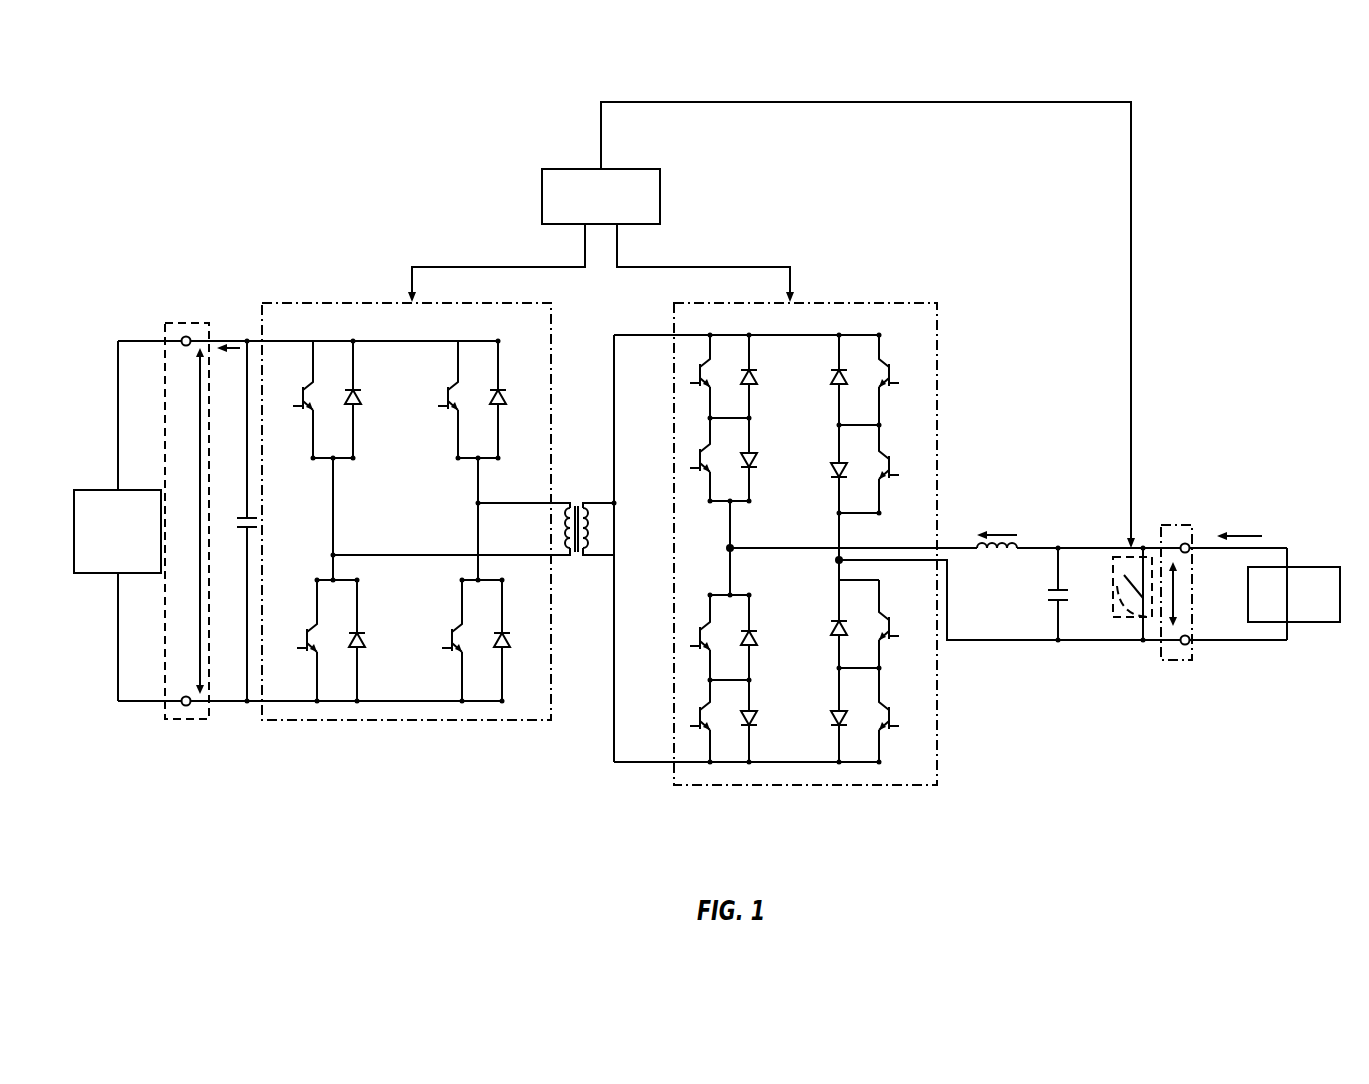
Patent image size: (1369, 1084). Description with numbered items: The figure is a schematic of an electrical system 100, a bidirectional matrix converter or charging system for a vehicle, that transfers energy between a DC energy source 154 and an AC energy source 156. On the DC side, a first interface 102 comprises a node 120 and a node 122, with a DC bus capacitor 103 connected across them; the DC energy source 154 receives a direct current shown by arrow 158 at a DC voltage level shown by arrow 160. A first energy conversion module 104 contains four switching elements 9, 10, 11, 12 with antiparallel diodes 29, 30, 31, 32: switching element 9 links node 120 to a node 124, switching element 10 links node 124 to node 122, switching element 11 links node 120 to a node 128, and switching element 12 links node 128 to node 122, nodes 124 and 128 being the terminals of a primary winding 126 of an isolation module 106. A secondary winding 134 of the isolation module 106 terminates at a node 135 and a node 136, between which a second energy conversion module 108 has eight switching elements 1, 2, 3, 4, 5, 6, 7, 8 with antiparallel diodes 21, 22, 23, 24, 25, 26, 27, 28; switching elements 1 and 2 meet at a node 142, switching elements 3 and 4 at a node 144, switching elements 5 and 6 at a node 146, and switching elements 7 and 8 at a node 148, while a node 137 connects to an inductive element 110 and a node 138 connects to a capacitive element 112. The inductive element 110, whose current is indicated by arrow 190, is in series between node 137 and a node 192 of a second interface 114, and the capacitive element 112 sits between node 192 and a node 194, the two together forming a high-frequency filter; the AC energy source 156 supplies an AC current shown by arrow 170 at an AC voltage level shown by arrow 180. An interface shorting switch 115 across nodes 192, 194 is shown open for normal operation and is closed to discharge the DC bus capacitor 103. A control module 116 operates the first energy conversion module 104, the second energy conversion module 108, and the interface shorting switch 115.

The electrical system 100 is at (184, 146).
The first interface 102 is at (183, 722).
The DC bus capacitor 103 is at (255, 522).
The first energy conversion module 104 is at (443, 722).
The isolation module 106 is at (577, 572).
The second energy conversion module 108 is at (868, 790).
The inductive element 110 is at (998, 560).
The capacitive element 112 is at (1076, 596).
The second interface 114 is at (1178, 662).
The interface shorting switch 115 is at (1124, 567).
The control module 116 is at (618, 170).
The node 120 is at (188, 337).
The node 122 is at (188, 706).
The node 124 is at (336, 555).
The primary winding 126 is at (565, 550).
The node 128 is at (476, 503).
The secondary winding 134 is at (590, 548).
The node 135 is at (711, 333).
The node 136 is at (710, 765).
The node 137 is at (733, 547).
The node 138 is at (836, 561).
The node 142 is at (708, 417).
The node 144 is at (882, 668).
The node 146 is at (708, 680).
The node 148 is at (882, 425).
The DC energy source 154 is at (118, 490).
The AC energy source 156 is at (1290, 567).
The arrow 158 is at (222, 345).
The arrow 160 is at (203, 594).
The arrow 170 is at (1242, 534).
The arrow 180 is at (1175, 590).
The arrow 190 is at (1002, 532).
The node 192 is at (1186, 544).
The node 194 is at (1187, 645).
The switching element 1 is at (698, 376).
The switching element 2 is at (709, 459).
The switching element 3 is at (898, 624).
The switching element 4 is at (898, 715).
The switching element 5 is at (709, 721).
The switching element 6 is at (709, 637).
The switching element 7 is at (898, 469).
The switching element 8 is at (895, 380).
The switching element 9 is at (297, 399).
The switching element 10 is at (296, 640).
The switching element 11 is at (438, 399).
The switching element 12 is at (441, 640).
The diode 21 is at (765, 376).
The diode 22 is at (765, 459).
The diode 23 is at (824, 624).
The diode 24 is at (824, 715).
The diode 25 is at (765, 721).
The diode 26 is at (765, 637).
The diode 27 is at (824, 469).
The diode 28 is at (824, 380).
The diode 29 is at (366, 399).
The diode 30 is at (370, 640).
The diode 31 is at (511, 399).
The diode 32 is at (515, 640).